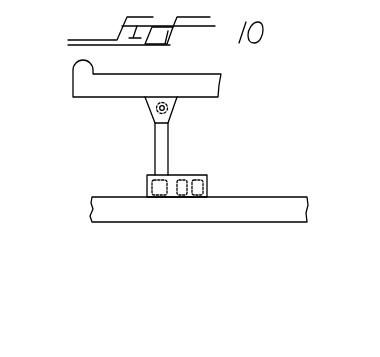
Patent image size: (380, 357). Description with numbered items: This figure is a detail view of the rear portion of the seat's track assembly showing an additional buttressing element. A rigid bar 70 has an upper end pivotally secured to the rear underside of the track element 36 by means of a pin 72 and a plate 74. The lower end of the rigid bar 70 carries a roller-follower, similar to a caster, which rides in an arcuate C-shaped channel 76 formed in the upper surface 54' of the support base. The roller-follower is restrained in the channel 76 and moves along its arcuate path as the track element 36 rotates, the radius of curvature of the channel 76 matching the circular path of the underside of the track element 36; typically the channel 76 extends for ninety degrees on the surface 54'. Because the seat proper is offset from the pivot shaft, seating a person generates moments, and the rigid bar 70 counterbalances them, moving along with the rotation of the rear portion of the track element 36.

The track element 36 is at (204, 87).
The plate 74 is at (149, 102).
The pin 72 is at (170, 108).
The rigid bar 70 is at (162, 153).
The arcuate C-shaped channel 76 is at (153, 185).
The upper surface 54' is at (215, 182).